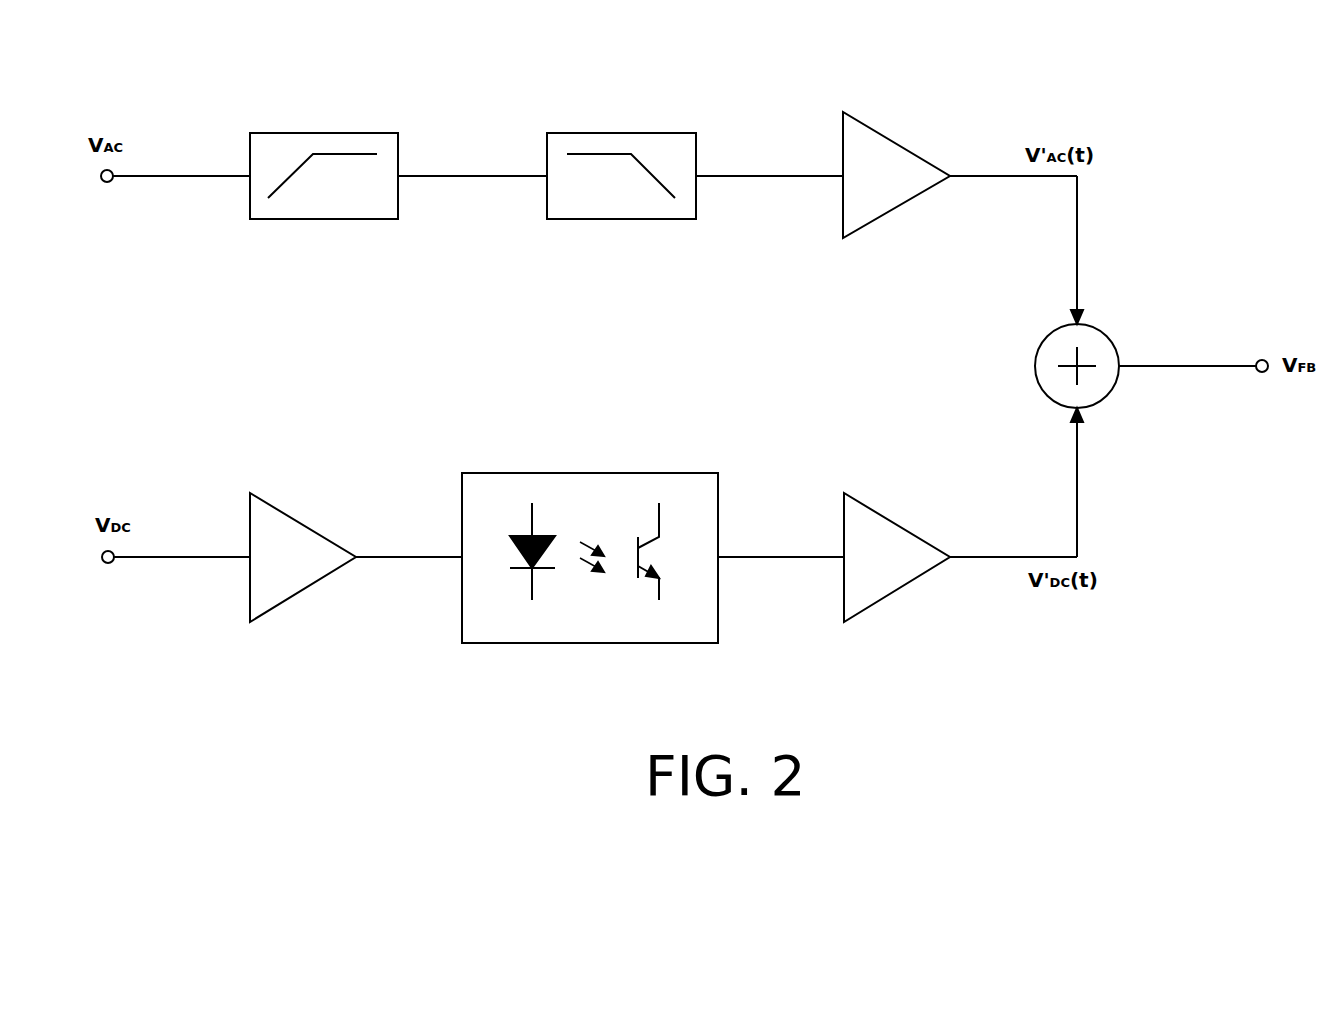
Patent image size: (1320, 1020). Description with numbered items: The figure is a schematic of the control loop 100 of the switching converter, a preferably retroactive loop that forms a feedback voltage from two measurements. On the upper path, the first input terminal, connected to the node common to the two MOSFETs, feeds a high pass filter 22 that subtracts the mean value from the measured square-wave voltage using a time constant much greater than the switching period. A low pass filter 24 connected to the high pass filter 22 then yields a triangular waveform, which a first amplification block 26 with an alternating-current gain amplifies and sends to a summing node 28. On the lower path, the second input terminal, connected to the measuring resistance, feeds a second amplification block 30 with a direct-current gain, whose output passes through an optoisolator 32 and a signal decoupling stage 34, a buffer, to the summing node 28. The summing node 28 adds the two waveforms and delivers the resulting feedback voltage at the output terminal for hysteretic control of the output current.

The high pass filter 22 is at (325, 133).
The low pass filter 24 is at (603, 133).
The first amplification block 26 is at (843, 223).
The summing node 28 is at (1035, 372).
The second amplification block 30 is at (282, 603).
The optoisolator 32 is at (625, 473).
The signal decoupling stage 34 is at (863, 610).
The control loop 100 is at (1007, 727).